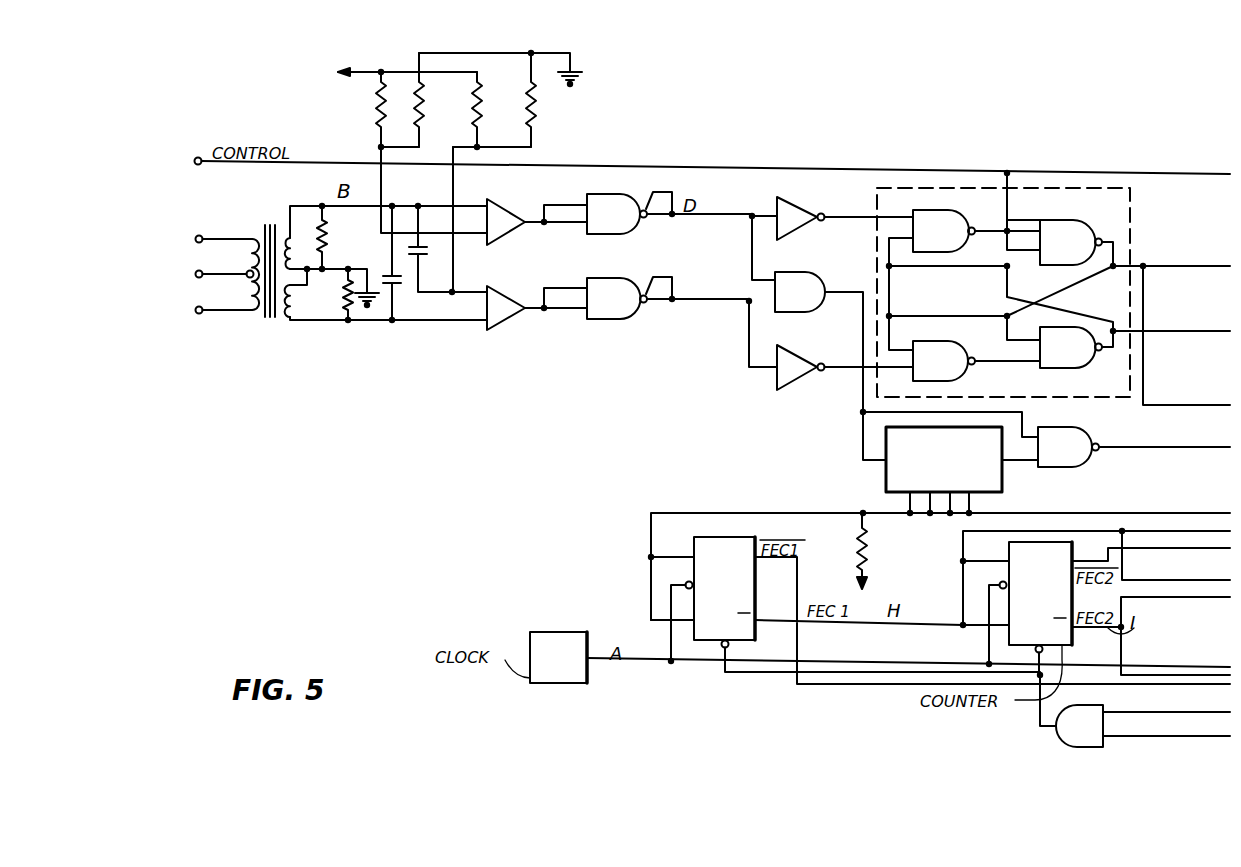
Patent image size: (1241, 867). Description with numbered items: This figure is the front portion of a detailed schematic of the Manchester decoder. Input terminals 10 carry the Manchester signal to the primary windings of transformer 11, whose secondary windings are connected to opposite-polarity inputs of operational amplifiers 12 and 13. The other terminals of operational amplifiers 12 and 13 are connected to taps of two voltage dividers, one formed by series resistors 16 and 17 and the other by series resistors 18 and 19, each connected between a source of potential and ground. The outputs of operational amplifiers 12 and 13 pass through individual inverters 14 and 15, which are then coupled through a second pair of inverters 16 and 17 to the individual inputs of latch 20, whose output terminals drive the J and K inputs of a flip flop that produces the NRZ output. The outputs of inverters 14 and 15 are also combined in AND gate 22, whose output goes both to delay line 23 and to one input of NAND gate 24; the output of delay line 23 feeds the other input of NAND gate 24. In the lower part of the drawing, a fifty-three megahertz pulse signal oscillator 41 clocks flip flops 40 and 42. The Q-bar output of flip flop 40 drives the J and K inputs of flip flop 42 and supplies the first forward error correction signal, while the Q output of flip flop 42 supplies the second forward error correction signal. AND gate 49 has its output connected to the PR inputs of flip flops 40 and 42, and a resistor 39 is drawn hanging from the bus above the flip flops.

The input terminals 10 is at (202, 237).
The transformer 11 is at (259, 224).
The operational amplifier 12 is at (507, 202).
The operational amplifier 13 is at (507, 291).
The inverter 14 is at (592, 193).
The inverter 15 is at (628, 278).
The series resistor / inverter 16 is at (482, 118).
The series resistor / inverter 17 is at (535, 118).
The series resistor 18 is at (386, 118).
The series resistor 19 is at (426, 118).
The latch 20 is at (928, 196).
The AND gate 22 is at (826, 284).
The delay line 23 is at (863, 448).
The NAND gate 24 is at (1078, 466).
The resistor 39 is at (860, 560).
The flip flop 40 is at (740, 537).
The pulse signal oscillator 41 is at (586, 632).
The flip flop 42 is at (1009, 549).
The AND gate 49 is at (1055, 738).